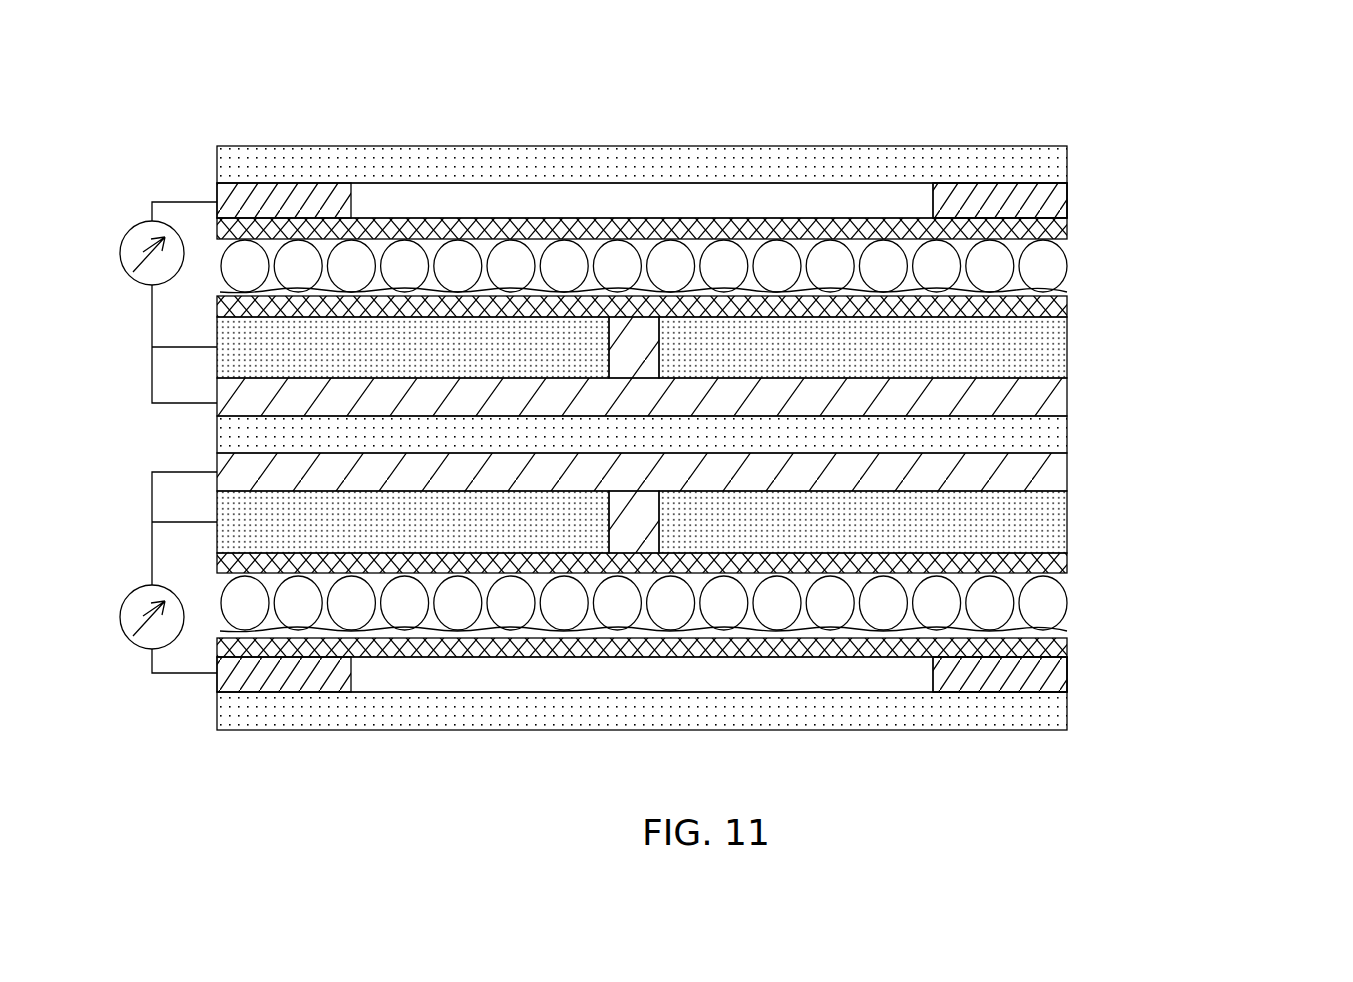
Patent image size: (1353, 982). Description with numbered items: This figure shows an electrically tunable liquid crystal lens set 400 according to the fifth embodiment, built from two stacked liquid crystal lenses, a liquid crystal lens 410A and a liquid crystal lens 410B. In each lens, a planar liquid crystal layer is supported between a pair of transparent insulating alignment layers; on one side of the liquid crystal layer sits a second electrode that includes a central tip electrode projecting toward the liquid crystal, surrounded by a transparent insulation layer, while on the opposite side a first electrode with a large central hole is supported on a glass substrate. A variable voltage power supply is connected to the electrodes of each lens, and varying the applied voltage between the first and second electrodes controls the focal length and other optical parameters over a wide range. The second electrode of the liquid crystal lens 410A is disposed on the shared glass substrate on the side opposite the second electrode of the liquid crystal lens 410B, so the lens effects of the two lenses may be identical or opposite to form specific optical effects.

The electrically tunable liquid crystal lens set 400 is at (1108, 120).
The liquid crystal lens 410A is at (1206, 705).
The liquid crystal lens 410B is at (1206, 422).